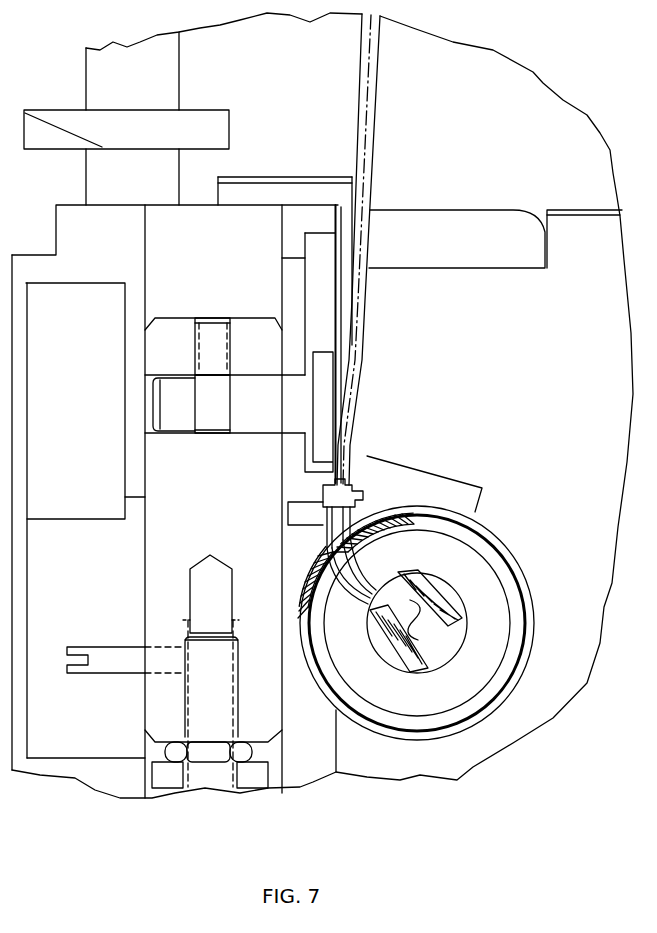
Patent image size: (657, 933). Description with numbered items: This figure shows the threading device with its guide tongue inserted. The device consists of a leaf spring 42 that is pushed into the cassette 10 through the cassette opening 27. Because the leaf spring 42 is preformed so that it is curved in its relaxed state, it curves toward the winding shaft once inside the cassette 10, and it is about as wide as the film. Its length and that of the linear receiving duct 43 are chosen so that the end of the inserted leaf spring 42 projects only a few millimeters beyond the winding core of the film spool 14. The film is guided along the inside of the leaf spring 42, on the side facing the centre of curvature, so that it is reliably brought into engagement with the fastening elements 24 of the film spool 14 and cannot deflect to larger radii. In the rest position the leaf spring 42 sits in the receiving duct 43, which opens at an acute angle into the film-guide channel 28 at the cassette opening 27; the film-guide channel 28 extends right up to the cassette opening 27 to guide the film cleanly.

The cassette 10 is at (503, 550).
The film spool 14 is at (483, 577).
The fastening elements 24 is at (460, 613).
The cassette opening 27 is at (348, 487).
The film-guide channel 28 is at (362, 283).
The leaf spring 42 is at (352, 340).
The receiving duct 43 is at (335, 242).